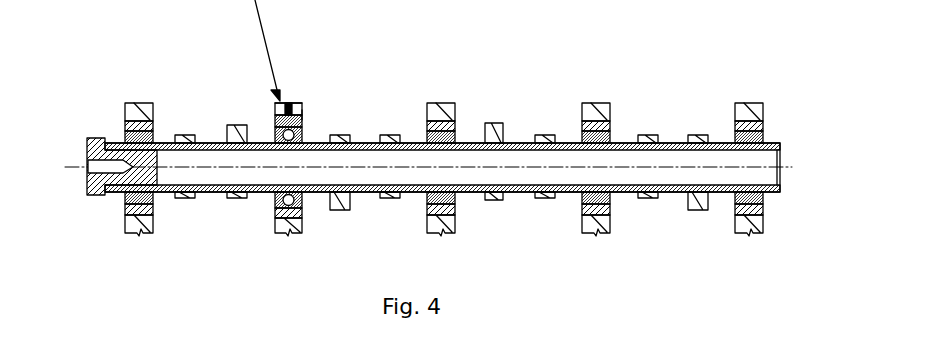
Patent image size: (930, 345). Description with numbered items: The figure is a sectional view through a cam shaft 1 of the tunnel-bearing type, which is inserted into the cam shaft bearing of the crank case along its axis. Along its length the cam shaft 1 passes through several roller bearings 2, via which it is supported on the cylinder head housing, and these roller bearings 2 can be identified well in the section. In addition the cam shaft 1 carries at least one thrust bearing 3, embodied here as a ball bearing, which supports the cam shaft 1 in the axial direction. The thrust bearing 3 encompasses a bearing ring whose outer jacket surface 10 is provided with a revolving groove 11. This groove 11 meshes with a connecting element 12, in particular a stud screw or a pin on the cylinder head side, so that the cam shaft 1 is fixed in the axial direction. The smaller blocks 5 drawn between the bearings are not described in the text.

The cam shaft 1 is at (586, 176).
The roller bearing 2 is at (445, 102).
The thrust bearing 3 is at (305, 121).
The hub 5 is at (502, 135).
The outer jacket surface 10 is at (277, 100).
The revolving groove 11 is at (310, 105).
The connecting element 12 is at (287, 100).